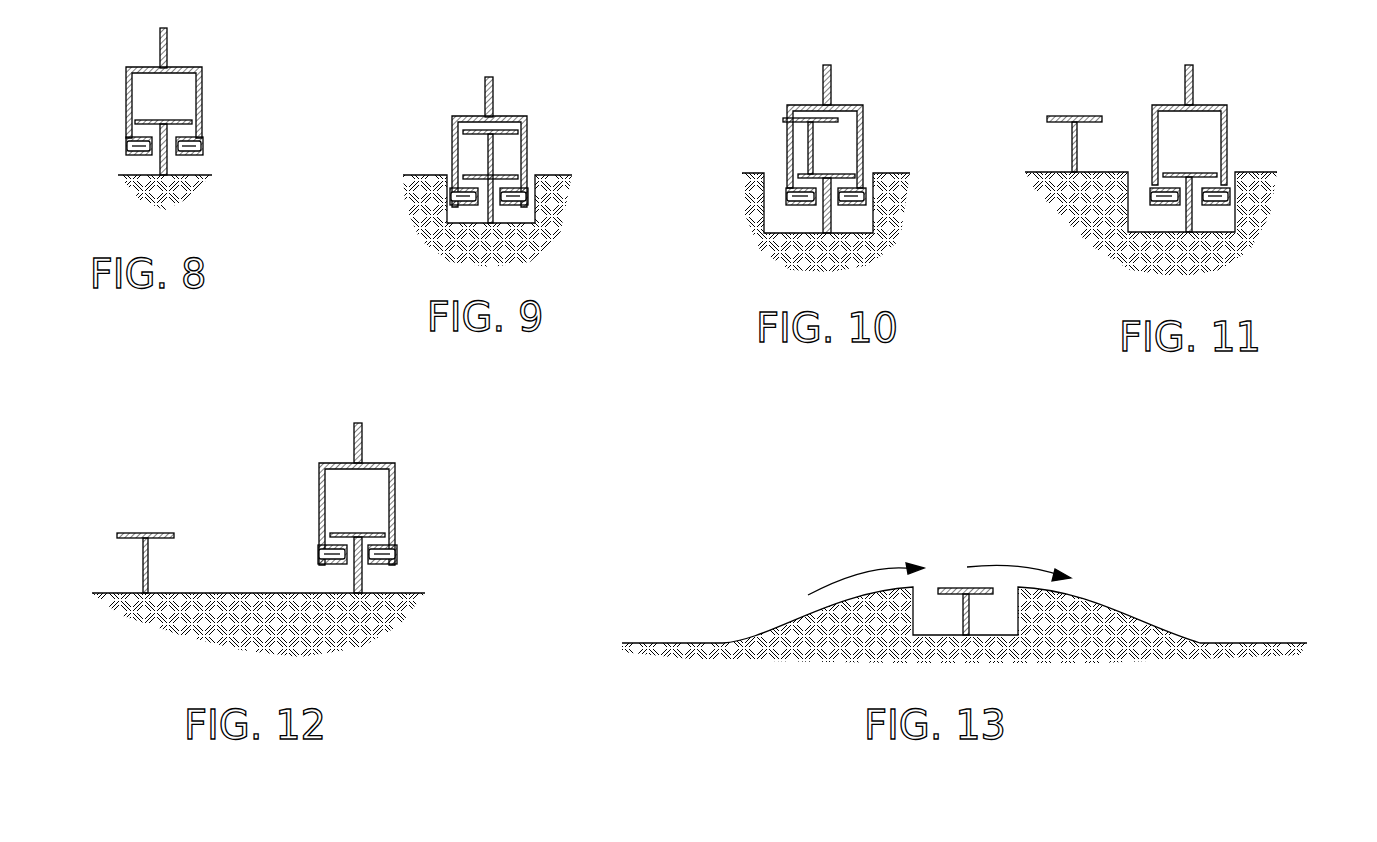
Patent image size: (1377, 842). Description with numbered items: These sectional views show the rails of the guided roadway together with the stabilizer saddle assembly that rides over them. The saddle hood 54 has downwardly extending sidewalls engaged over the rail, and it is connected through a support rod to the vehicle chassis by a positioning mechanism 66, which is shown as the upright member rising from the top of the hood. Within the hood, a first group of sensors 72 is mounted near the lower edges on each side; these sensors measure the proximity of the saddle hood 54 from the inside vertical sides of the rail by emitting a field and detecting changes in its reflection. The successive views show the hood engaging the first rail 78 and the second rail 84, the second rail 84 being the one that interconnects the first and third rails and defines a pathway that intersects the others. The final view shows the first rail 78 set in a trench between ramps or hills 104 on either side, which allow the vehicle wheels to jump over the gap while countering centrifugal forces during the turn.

In FIG. 8, the saddle hood 54 is at (203, 88).
In FIG. 9, the saddle hood 54 is at (528, 157).
In FIG. 10, the saddle hood 54 is at (833, 125).
In FIG. 11, the saddle hood 54 is at (1227, 122).
In FIG. 12, the saddle hood 54 is at (395, 482).
In FIG. 8, the positioning mechanism 66 is at (168, 50).
In FIG. 9, the positioning mechanism 66 is at (493, 88).
In FIG. 10, the positioning mechanism 66 is at (863, 140).
In FIG. 11, the positioning mechanism 66 is at (1193, 80).
In FIG. 12, the positioning mechanism 66 is at (362, 440).
In FIG. 8, the sensors 72 is at (126, 145).
In FIG. 9, the sensors 72 is at (450, 196).
In FIG. 10, the sensors 72 is at (786, 196).
In FIG. 11, the sensors 72 is at (1150, 196).
In FIG. 12, the sensors 72 is at (318, 553).
In FIG. 8, the first rail 78 is at (138, 120).
In FIG. 9, the first rail 78 is at (512, 135).
In FIG. 10, the first rail 78 is at (805, 120).
In FIG. 11, the first rail 78 is at (1070, 116).
In FIG. 12, the first rail 78 is at (143, 533).
In FIG. 13, the first rail 78 is at (945, 588).
In FIG. 9, the second rail 84 is at (475, 176).
In FIG. 10, the second rail 84 is at (798, 176).
In FIG. 11, the second rail 84 is at (1205, 173).
In FIG. 12, the second rail 84 is at (372, 535).
In FIG. 13, the ramps or hills 104 is at (787, 615).